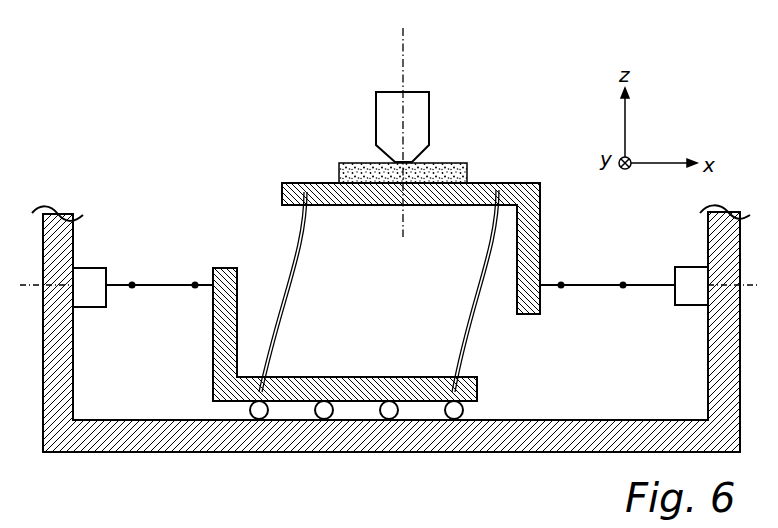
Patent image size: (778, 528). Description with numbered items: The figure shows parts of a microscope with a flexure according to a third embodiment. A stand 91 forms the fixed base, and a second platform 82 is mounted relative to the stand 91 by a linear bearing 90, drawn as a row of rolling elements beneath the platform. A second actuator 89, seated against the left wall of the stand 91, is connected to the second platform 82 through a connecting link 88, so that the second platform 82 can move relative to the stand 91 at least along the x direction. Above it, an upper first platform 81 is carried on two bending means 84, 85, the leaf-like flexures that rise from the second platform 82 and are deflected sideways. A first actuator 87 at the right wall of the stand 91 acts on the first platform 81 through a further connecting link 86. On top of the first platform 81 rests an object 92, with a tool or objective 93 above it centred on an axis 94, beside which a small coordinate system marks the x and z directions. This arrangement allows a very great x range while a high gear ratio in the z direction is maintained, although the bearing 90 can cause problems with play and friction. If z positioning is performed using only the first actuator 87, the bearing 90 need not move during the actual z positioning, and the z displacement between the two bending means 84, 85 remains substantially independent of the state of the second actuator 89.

The top plate / carrier 81 is at (315, 182).
The second platform 82 is at (477, 390).
The leaf spring 84 is at (297, 258).
The leaf spring 85 is at (477, 297).
The connecting rod 86 is at (596, 284).
The first actuator 87 is at (690, 266).
The connecting rod 88 is at (167, 284).
The second actuator 89 is at (92, 267).
The linear bearing 90 is at (465, 412).
The stand 91 is at (622, 419).
The workpiece 92 is at (467, 163).
The tool 93 is at (429, 107).
The tool axis 94 is at (404, 56).